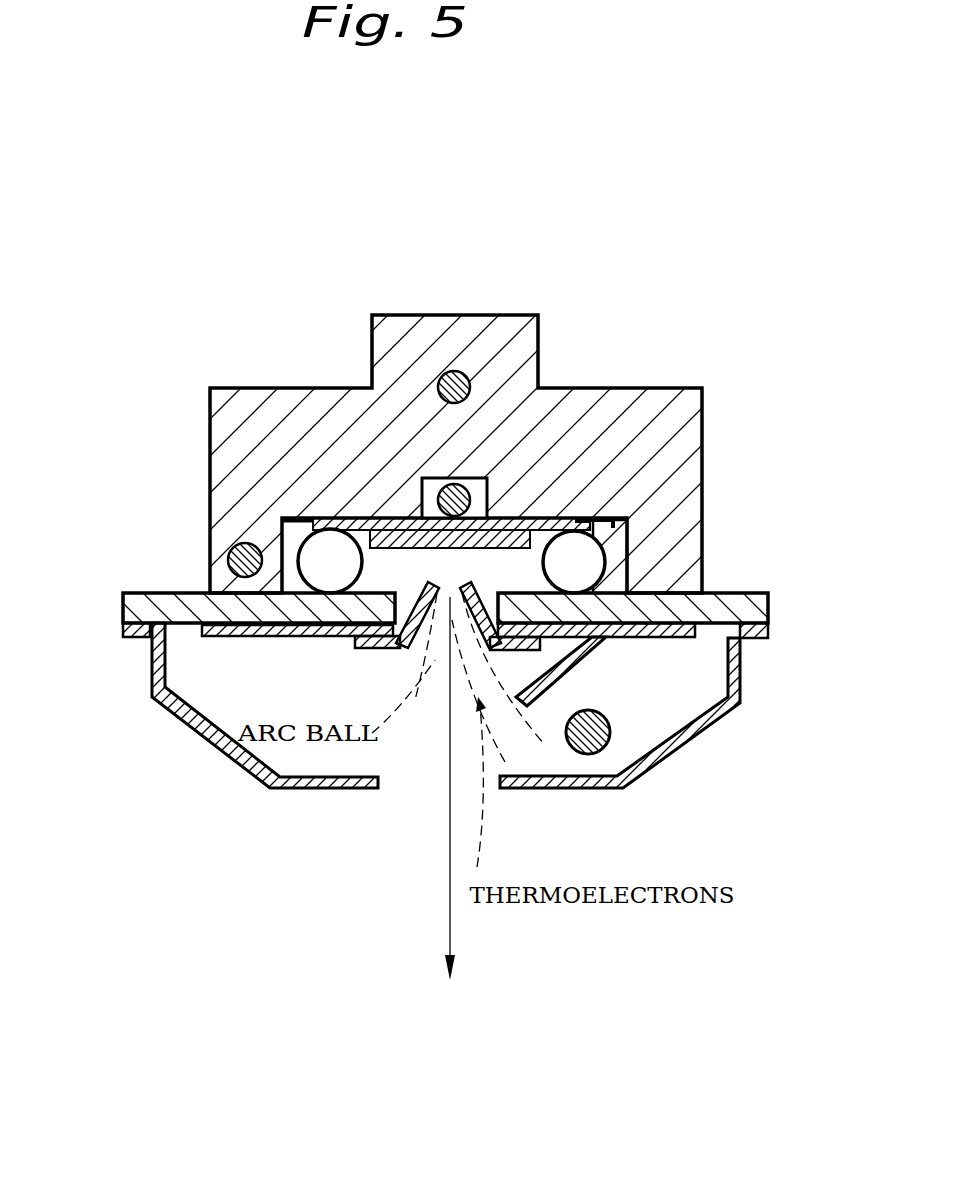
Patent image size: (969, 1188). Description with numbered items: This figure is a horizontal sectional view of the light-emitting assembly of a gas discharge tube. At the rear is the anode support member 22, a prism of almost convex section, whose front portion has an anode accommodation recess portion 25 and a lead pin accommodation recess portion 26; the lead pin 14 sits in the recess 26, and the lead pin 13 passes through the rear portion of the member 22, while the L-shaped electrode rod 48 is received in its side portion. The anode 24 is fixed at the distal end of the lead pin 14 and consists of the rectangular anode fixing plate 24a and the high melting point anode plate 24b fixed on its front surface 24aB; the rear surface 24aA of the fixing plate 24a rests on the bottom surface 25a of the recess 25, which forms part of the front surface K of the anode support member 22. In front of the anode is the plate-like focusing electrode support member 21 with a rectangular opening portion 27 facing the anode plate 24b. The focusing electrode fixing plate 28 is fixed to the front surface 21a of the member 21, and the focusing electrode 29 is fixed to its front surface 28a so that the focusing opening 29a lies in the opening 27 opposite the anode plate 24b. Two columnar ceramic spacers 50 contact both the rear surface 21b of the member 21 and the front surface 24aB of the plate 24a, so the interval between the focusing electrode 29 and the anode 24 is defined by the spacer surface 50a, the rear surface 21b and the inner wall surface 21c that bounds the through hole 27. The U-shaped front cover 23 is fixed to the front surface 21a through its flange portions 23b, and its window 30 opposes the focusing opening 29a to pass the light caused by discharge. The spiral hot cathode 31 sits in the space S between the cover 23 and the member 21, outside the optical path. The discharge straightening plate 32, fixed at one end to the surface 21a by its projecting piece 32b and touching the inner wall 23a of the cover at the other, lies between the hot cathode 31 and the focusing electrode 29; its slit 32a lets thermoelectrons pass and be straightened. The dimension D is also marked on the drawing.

The lead pin 13 is at (447, 372).
The lead pin 14 is at (438, 478).
The lead pin accommodation recess portion 26 is at (477, 485).
The anode support member 22 is at (665, 398).
The anode 24 is at (395, 414).
The anode fixing plate 24a is at (372, 533).
The anode plate 24b is at (393, 517).
The rear surface of anode fixing plate 24aA is at (580, 515).
The front surface of anode fixing plate 24aB is at (345, 516).
The anode accommodation recess portion 25 is at (618, 537).
The bottom surface of anode accommodation recess portion 25a is at (615, 518).
The electrode rod 48 is at (232, 548).
The spacer 50 is at (318, 556).
The surface of spacer 50a is at (433, 530).
The front surface of anode support member K is at (448, 632).
The focusing electrode support member 21 is at (448, 632).
The front surface of focusing electrode support member 21a is at (152, 677).
The rear surface of focusing electrode support member 21b is at (165, 592).
The inner wall surface of focusing electrode support member 21c is at (297, 671).
The flange portion 23b is at (122, 632).
The focusing electrode fixing plate 28 is at (297, 671).
The front surface of focusing electrode fixing plate 28a is at (270, 636).
The focusing electrode 29 is at (447, 709).
The focusing opening 29a is at (436, 645).
The opening portion 27 is at (447, 694).
The discharge straightening plate 32 is at (573, 658).
The slit 32a is at (590, 755).
The projecting piece 32b is at (740, 703).
The front cover 23 is at (623, 757).
The inner wall of front cover 23a is at (603, 790).
The hot cathode 31 is at (620, 783).
The space S is at (682, 697).
The distance D is at (520, 768).
The window 30 is at (440, 790).